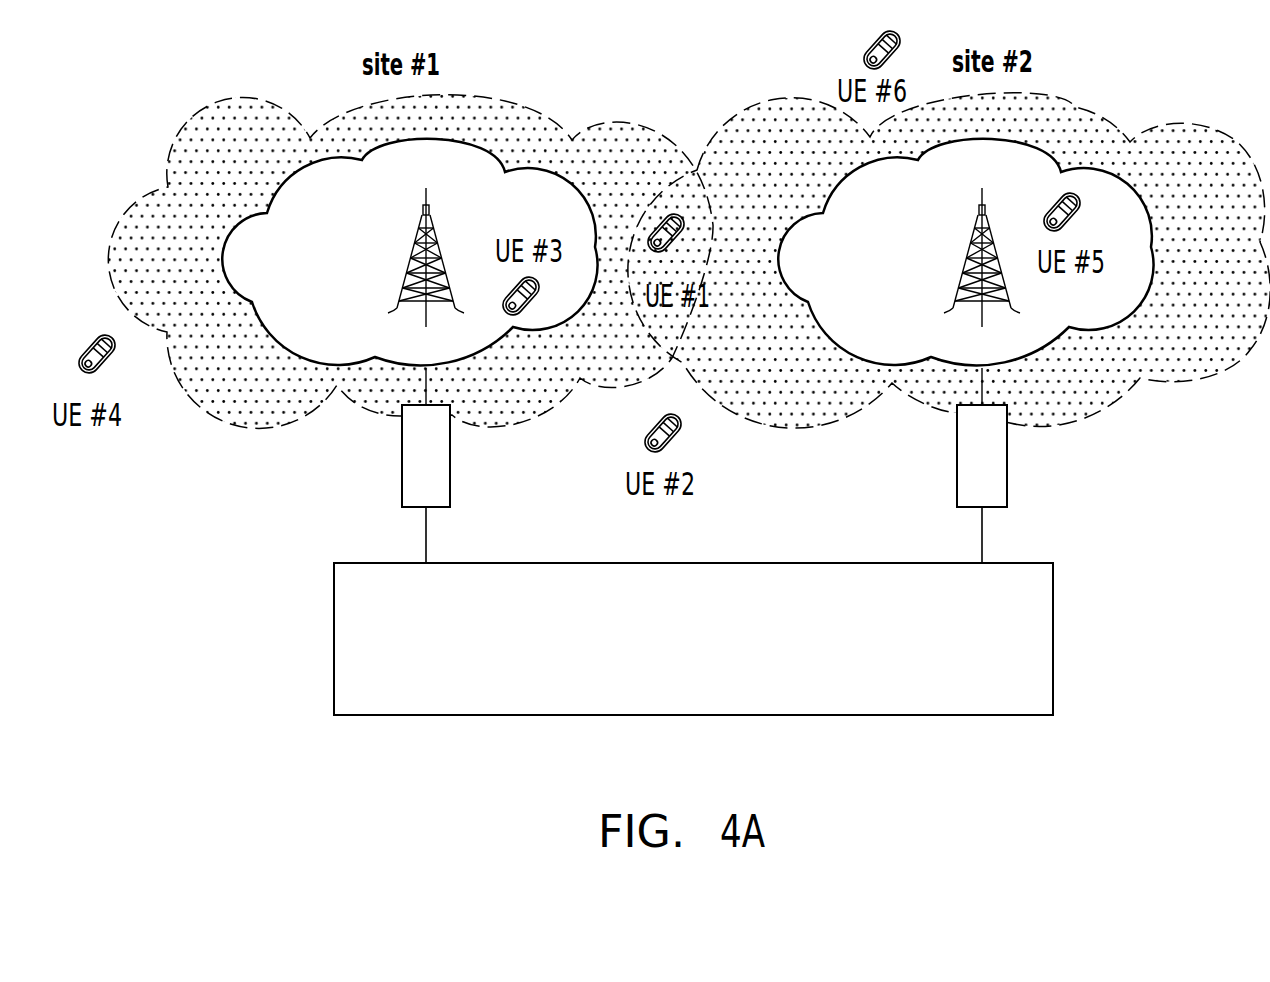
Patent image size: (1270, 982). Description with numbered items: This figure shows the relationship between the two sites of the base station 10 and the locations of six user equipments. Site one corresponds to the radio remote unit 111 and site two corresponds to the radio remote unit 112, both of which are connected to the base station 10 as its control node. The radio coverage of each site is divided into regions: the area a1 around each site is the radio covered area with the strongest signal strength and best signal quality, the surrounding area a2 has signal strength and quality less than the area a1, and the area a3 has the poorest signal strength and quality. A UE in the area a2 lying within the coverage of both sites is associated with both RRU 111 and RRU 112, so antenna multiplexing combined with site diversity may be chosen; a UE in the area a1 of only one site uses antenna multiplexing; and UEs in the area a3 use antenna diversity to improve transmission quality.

The base station 10 is at (1053, 637).
The radio remote unit 111 is at (450, 475).
The radio remote unit 112 is at (1007, 475).
The area a1 is at (573, 183).
The area a2 is at (689, 244).
The area a3 is at (817, 506).